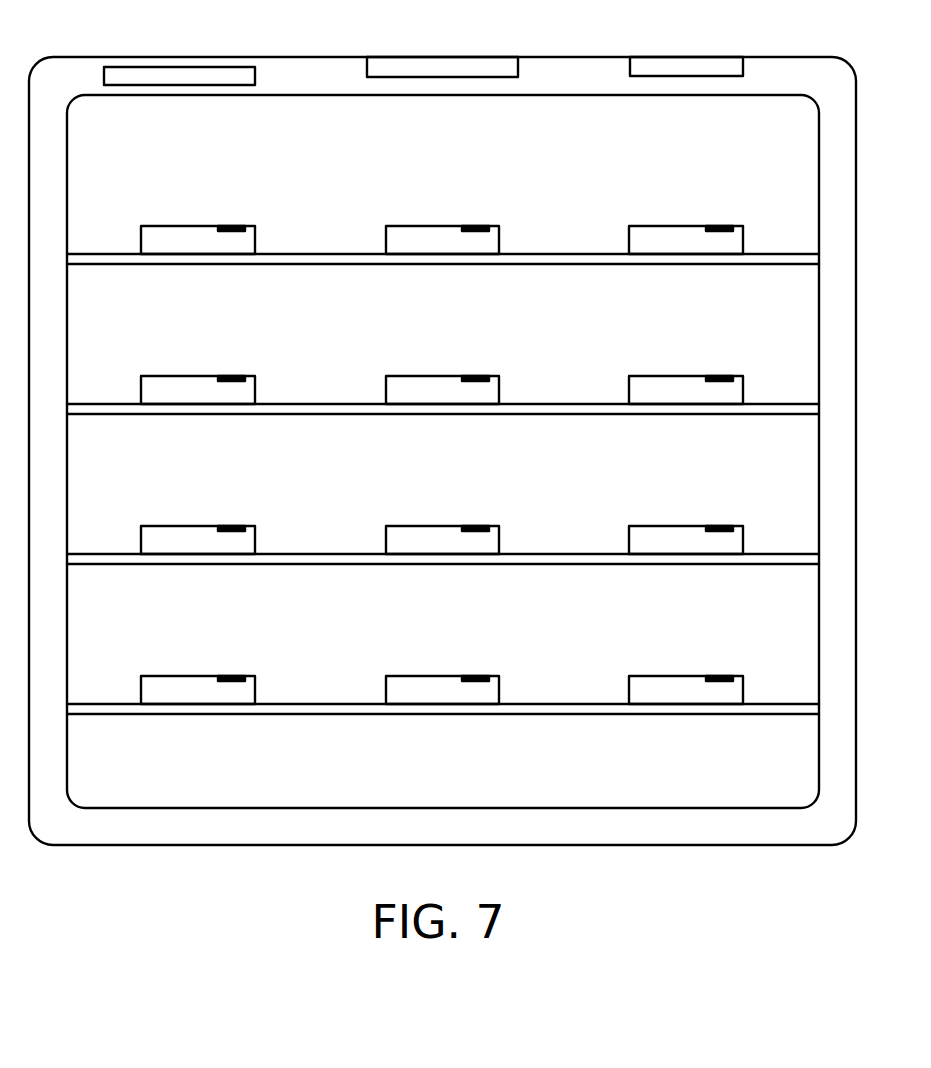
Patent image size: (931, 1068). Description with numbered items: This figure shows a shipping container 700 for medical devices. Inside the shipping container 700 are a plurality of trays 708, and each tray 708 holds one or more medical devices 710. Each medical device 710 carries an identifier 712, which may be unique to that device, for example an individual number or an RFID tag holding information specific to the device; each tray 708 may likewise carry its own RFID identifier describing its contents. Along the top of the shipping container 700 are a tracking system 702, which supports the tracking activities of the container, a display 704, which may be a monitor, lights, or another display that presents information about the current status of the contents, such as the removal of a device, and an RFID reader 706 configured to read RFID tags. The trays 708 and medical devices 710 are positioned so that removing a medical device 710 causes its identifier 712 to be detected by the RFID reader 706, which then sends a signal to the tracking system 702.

The shipping container 700 is at (67, 67).
The tracking system 702 is at (223, 77).
The display 704 is at (501, 66).
The RFID reader 706 is at (727, 66).
The tray 708 is at (569, 708).
The medical device 710 is at (408, 685).
The identifier 712 is at (478, 678).